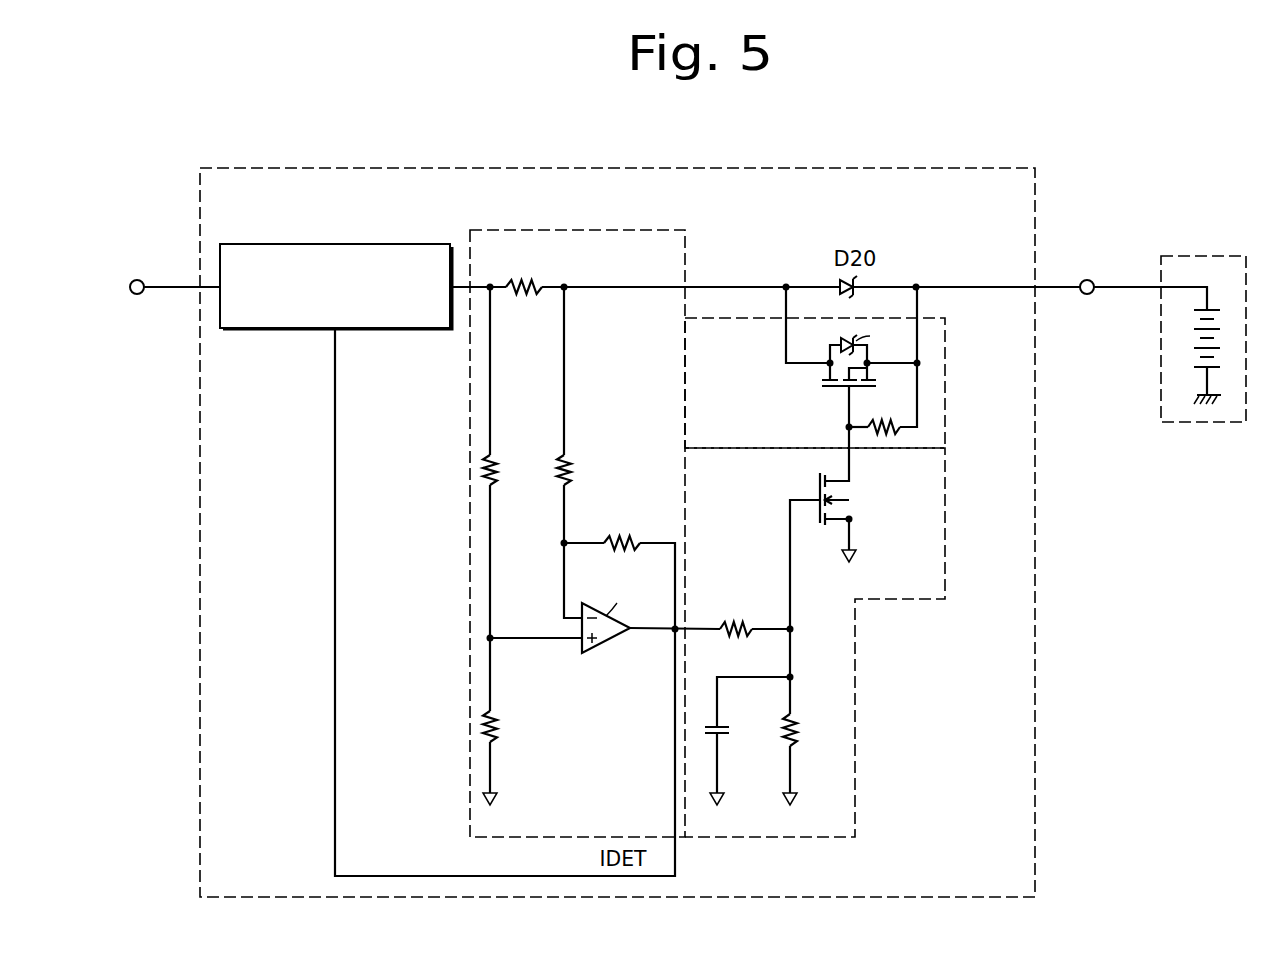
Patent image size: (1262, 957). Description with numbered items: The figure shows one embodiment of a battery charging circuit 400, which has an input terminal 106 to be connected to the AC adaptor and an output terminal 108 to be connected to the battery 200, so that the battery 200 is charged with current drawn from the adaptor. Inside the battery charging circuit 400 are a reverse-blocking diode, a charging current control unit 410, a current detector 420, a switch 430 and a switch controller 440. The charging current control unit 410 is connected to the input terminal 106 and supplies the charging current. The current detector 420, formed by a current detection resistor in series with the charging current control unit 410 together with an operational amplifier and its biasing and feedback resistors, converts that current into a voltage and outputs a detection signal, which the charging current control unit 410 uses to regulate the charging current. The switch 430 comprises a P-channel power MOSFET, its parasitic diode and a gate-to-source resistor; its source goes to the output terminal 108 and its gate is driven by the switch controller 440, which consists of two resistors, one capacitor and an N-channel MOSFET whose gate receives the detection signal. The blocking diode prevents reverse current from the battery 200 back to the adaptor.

The input terminal 106 is at (140, 280).
The output terminal 108 is at (1092, 280).
The battery 200 is at (1212, 256).
The battery charging circuit 400 is at (930, 168).
The charging current control unit 410 is at (408, 244).
The current detector 420 is at (573, 230).
The switch 430 is at (945, 385).
The switch controller 440 is at (945, 519).